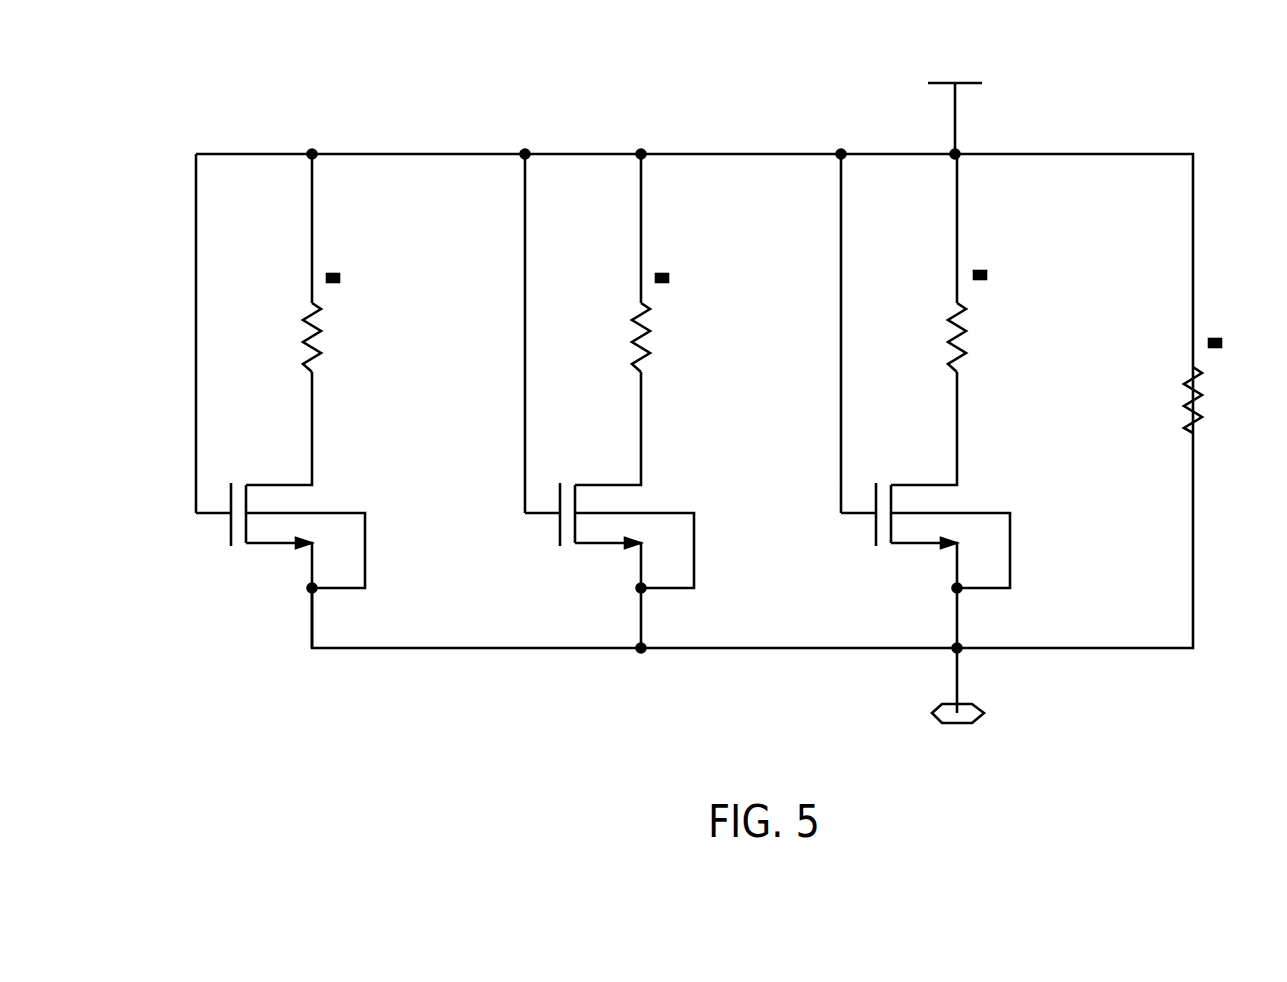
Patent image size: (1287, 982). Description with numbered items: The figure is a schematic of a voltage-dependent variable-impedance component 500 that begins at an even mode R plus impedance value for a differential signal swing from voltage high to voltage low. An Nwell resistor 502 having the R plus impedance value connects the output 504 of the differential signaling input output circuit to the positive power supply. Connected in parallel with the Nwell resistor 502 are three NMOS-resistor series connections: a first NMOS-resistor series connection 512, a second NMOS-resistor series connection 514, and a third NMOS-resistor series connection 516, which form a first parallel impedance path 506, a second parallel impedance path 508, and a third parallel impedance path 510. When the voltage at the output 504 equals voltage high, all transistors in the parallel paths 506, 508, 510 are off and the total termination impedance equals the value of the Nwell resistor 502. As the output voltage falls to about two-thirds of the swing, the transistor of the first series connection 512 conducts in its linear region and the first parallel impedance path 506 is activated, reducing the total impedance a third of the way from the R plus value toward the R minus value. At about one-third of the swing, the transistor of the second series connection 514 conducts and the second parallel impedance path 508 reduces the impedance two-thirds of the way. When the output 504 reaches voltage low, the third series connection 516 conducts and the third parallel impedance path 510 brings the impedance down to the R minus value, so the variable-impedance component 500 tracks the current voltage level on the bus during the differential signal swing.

The variable-impedance component 500 is at (536, 722).
The R+ Nwell resistor 502 is at (1167, 380).
The output 504 is at (979, 705).
The first parallel impedance path 506 is at (1002, 276).
The second parallel impedance path 508 is at (684, 276).
The third parallel impedance path 510 is at (356, 276).
The I13-R1 NMOS-resistor series connection 512 is at (973, 364).
The I14-R2 NMOS-resistor series connection 514 is at (657, 364).
The I16-R3 NMOS-resistor series connection 516 is at (328, 364).